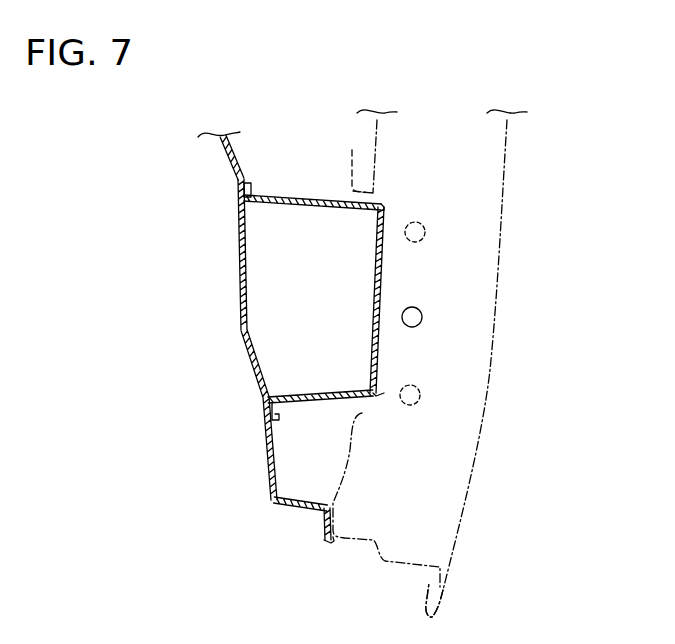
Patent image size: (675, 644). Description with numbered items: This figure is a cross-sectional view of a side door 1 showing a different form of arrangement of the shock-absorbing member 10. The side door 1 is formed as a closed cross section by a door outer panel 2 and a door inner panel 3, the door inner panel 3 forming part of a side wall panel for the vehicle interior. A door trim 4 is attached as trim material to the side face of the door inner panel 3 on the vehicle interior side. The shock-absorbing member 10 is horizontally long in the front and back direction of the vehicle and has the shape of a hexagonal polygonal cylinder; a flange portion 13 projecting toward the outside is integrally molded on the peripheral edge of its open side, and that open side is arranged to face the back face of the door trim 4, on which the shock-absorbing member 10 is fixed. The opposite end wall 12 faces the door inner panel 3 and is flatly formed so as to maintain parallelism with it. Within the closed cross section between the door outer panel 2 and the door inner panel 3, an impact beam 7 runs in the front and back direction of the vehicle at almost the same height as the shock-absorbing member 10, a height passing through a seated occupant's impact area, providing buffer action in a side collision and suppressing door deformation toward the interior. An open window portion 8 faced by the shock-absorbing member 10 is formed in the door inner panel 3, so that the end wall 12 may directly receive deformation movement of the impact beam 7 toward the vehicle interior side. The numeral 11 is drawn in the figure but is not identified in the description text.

The side door 1 is at (505, 185).
The door outer panel 2 is at (468, 483).
The door inner panel 3 is at (372, 130).
The door trim 4 is at (235, 322).
The impact beam 7 is at (425, 228).
The open window portion 8 is at (352, 150).
The shock-absorbing member 10 is at (396, 359).
The bottom wall 11 is at (308, 403).
The end wall 12 is at (378, 352).
The flange portion 13 is at (251, 191).